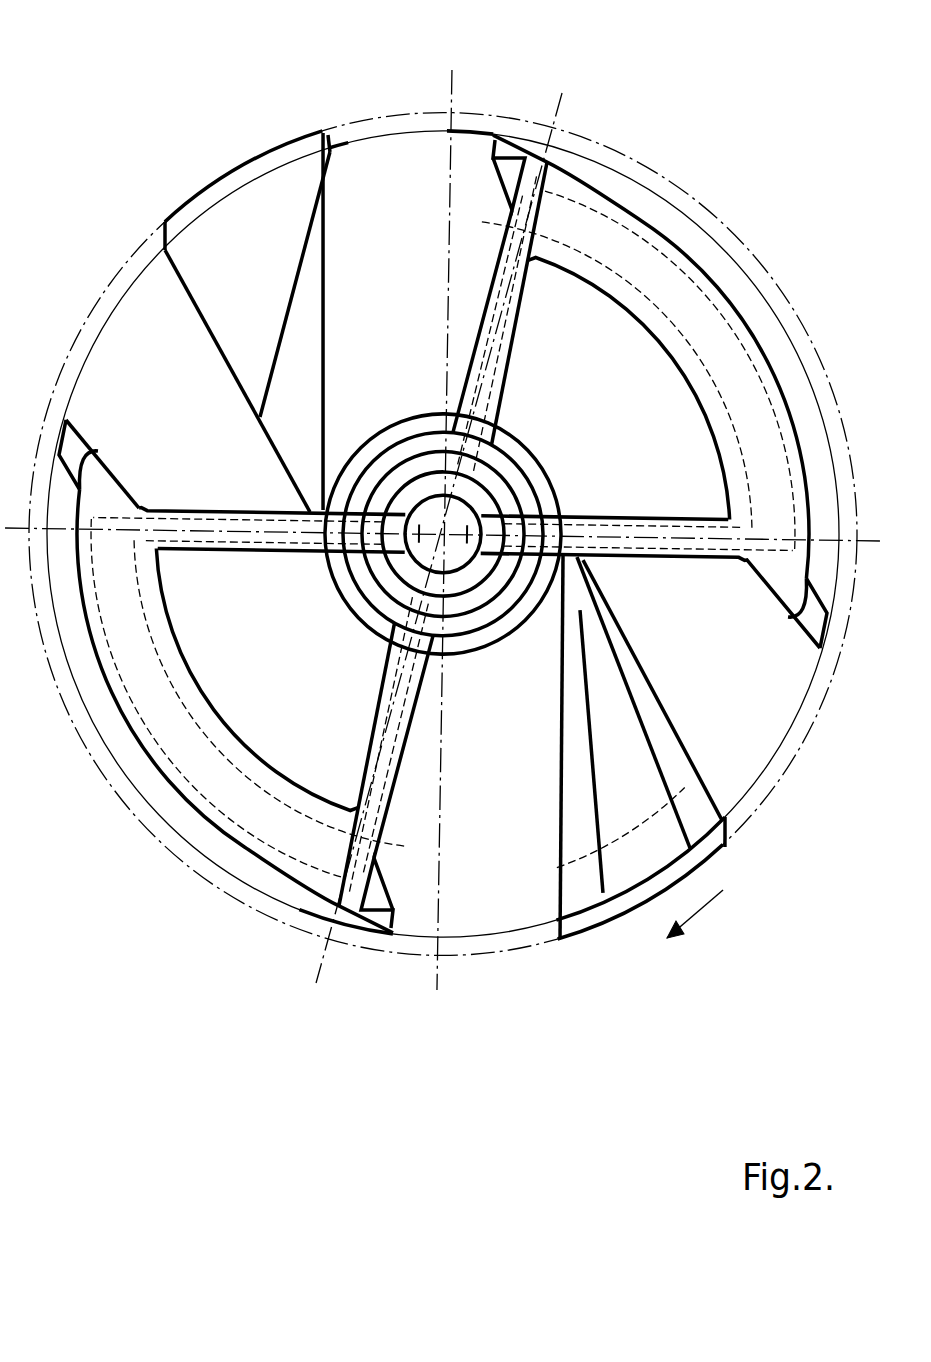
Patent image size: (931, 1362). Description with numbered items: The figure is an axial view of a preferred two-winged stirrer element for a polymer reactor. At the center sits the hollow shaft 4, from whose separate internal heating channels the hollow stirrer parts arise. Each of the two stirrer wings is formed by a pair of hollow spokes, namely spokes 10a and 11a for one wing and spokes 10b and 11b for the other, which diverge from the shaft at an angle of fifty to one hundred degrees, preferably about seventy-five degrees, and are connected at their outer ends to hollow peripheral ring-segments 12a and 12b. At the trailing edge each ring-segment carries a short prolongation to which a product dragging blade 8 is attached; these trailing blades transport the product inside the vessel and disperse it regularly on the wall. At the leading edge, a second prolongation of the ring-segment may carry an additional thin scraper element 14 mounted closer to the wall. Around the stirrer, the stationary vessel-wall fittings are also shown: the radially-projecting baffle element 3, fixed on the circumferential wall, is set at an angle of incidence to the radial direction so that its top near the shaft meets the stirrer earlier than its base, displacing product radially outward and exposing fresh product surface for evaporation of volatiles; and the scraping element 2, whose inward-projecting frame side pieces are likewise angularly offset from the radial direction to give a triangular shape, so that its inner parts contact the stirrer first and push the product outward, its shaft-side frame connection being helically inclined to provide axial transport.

The scraping element 2 is at (663, 757).
The baffle element 3 is at (262, 217).
The hollow shaft 4 is at (382, 472).
The product dragging blade 8 is at (505, 120).
The hollow spoke 10a is at (510, 267).
The hollow spoke 10b is at (395, 652).
The hollow spoke 11a is at (623, 543).
The hollow spoke 11b is at (288, 535).
The hollow peripheral ring-segment 12a is at (667, 282).
The hollow peripheral ring-segment 12b is at (167, 730).
The thin scraper element 14 is at (67, 421).